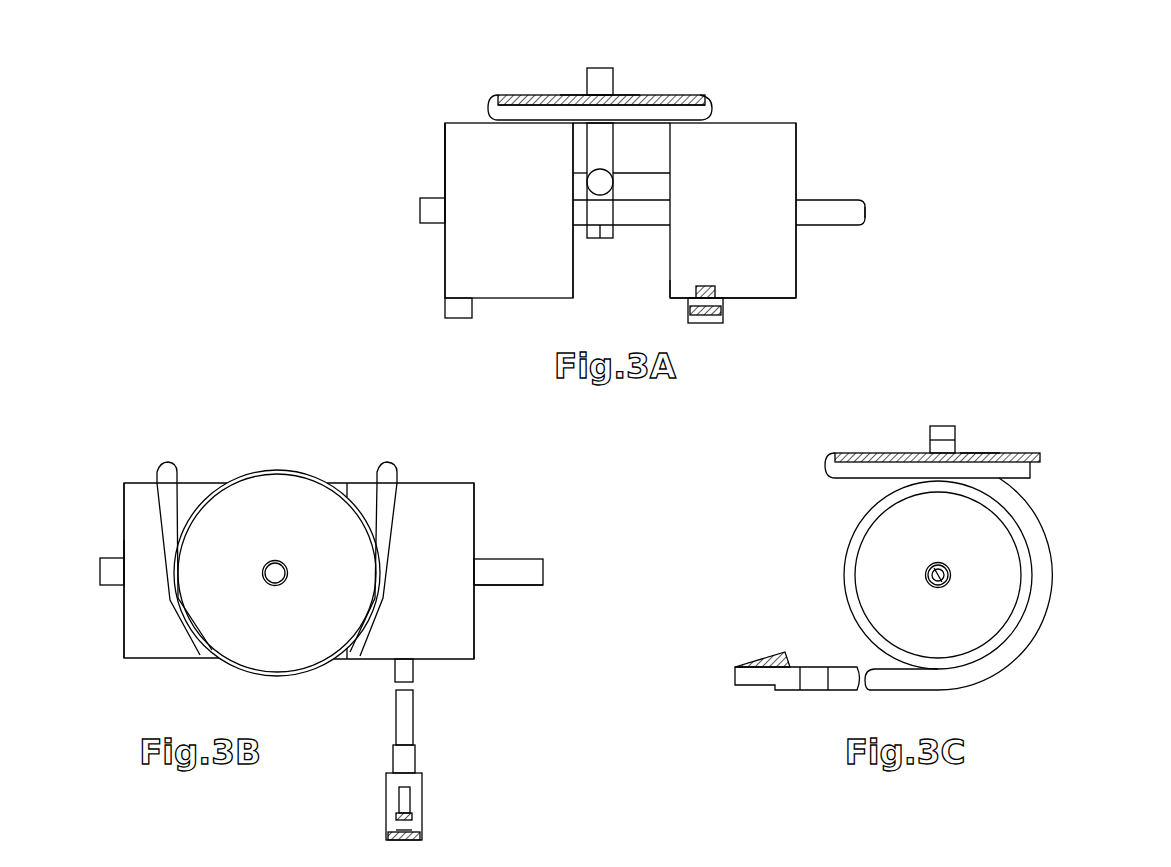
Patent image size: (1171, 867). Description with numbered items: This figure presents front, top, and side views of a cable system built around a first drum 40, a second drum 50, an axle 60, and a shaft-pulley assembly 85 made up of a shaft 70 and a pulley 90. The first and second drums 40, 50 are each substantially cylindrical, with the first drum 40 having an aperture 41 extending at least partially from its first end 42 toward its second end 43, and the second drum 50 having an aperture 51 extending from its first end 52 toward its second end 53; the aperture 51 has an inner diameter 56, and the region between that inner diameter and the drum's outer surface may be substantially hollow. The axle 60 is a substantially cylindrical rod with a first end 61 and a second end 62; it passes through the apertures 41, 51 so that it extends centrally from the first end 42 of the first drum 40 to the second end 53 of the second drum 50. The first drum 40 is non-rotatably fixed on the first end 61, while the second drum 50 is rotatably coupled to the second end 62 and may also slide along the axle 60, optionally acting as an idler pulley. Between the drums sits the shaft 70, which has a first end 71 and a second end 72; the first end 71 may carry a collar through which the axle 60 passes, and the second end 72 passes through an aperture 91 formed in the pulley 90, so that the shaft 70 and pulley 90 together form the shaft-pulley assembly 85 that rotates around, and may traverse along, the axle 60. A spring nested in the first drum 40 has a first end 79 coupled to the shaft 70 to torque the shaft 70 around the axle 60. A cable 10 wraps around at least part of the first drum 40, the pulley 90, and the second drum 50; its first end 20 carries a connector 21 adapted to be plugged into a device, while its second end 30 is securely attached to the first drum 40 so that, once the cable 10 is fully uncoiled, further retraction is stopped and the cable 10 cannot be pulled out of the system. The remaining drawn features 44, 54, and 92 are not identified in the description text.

In FIG. 3A, the cable 10 is at (490, 112).
In FIG. 3B, the cable 10 is at (402, 720).
In FIG. 3C, the cable 10 is at (900, 678).
In FIG. 3B, the first end of the cable 20 is at (412, 760).
In FIG. 3C, the first end of the cable 20 is at (815, 680).
In FIG. 3A, the connector 21 is at (725, 318).
In FIG. 3B, the connector 21 is at (415, 812).
In FIG. 3C, the connector 21 is at (755, 680).
In FIG. 3A, the second end of the cable 30 is at (448, 310).
In FIG. 3B, the first drum 40 is at (160, 658).
In FIG. 3A, the aperture 41 is at (445, 193).
In FIG. 3B, the aperture 41 is at (123, 558).
In FIG. 3A, the first end of the first drum 42 is at (445, 262).
In FIG. 3B, the first end of the first drum 42 is at (124, 483).
In FIG. 3A, the second end of the first drum 43 is at (573, 298).
In FIG. 3A, the arm 44 is at (518, 228).
In FIG. 3B, the arm 44 is at (190, 497).
In FIG. 3A, the second drum 50 is at (770, 124).
In FIG. 3B, the second drum 50 is at (465, 660).
In FIG. 3C, the second drum 50 is at (845, 590).
In FIG. 3B, the aperture 51 is at (476, 560).
In FIG. 3C, the aperture 51 is at (928, 568).
In FIG. 3A, the first end of the second drum 52 is at (672, 298).
In FIG. 3B, the first end of the second drum 52 is at (347, 500).
In FIG. 3A, the second end of the second drum 53 is at (800, 160).
In FIG. 3B, the second end of the second drum 53 is at (475, 483).
In FIG. 3A, the body portion 54 is at (755, 248).
In FIG. 3B, the body portion 54 is at (435, 612).
In FIG. 3C, the inner diameter 56 is at (955, 570).
In FIG. 3A, the axle 60 is at (848, 207).
In FIG. 3B, the axle 60 is at (520, 585).
In FIG. 3A, the first end of the axle 61 is at (420, 212).
In FIG. 3B, the first end of the axle 61 is at (98, 570).
In FIG. 3A, the second end of the axle 62 is at (865, 218).
In FIG. 3B, the second end of the axle 62 is at (545, 568).
In FIG. 3C, the second end of the axle 62 is at (955, 575).
In FIG. 3A, the shaft 70 is at (605, 148).
In FIG. 3B, the shaft 70 is at (280, 562).
In FIG. 3C, the shaft 70 is at (928, 430).
In FIG. 3A, the first end of the shaft 71 is at (603, 242).
In FIG. 3A, the second end of the shaft 72 is at (608, 73).
In FIG. 3C, the second end of the shaft 72 is at (952, 428).
In FIG. 3A, the first end of the spring 79 is at (618, 178).
In FIG. 3A, the shaft-pulley assembly 85 is at (578, 92).
In FIG. 3C, the shaft-pulley assembly 85 is at (968, 438).
In FIG. 3A, the pulley 90 is at (680, 97).
In FIG. 3B, the pulley 90 is at (298, 640).
In FIG. 3C, the pulley 90 is at (893, 452).
In FIG. 3B, the aperture 91 is at (262, 574).
In FIG. 3A, the plate 92 is at (500, 97).
In FIG. 3C, the plate 92 is at (1040, 465).